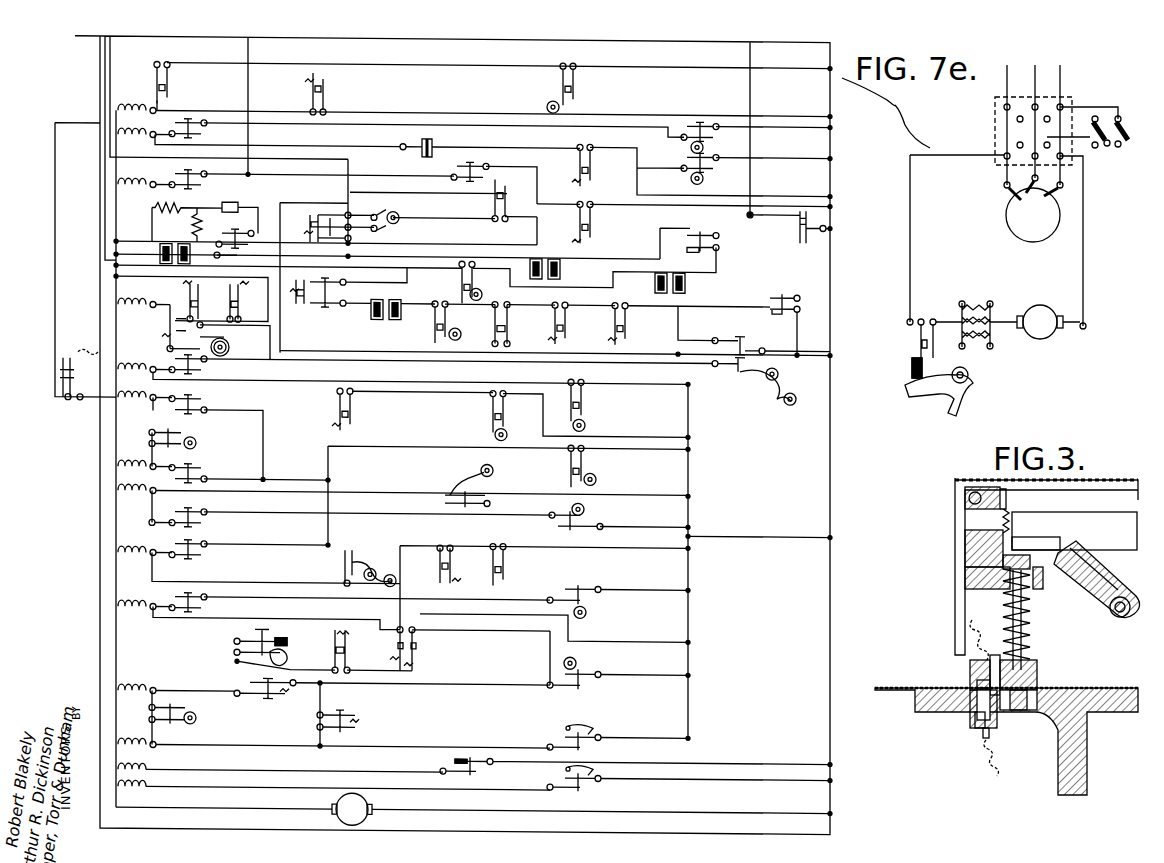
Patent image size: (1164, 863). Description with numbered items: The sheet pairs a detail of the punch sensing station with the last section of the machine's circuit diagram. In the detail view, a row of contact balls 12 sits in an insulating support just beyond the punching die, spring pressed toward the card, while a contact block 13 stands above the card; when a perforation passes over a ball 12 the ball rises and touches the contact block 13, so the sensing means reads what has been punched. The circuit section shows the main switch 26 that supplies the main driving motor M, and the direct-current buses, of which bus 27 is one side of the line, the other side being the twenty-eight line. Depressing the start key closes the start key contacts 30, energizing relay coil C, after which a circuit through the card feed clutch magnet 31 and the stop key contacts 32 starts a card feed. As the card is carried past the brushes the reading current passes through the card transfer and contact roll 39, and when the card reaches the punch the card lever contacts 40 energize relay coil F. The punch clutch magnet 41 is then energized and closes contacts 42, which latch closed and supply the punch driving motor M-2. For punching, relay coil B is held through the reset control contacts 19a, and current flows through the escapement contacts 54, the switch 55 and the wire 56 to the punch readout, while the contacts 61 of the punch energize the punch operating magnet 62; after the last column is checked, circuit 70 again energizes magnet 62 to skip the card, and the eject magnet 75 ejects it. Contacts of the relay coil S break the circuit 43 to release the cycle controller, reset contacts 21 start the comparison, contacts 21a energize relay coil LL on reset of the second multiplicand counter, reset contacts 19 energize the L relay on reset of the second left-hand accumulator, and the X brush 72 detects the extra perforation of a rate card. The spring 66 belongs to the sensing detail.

In FIG. 7E, the circuit 43 is at (100, 106).
In FIG. 7E, the circuit 70 is at (100, 210).
In FIG. 7E, the X brush 72 is at (433, 144).
In FIG. 7E, the wire 56 is at (345, 188).
In FIG. 7E, the switch 55 is at (389, 216).
In FIG. 7E, the escapement contacts 54 is at (493, 207).
In FIG. 7E, the eject magnet 75 is at (538, 254).
In FIG. 7E, the punch clutch magnet 41 is at (685, 282).
In FIG. 7E, the contacts of the punch 61 is at (214, 238).
In FIG. 7E, the punch operating magnet 62 is at (160, 256).
In FIG. 7E, the switch 26 is at (1120, 152).
In FIG. 7E, the contacts 42 is at (918, 338).
In FIG. 7E, the D. C. bus 27 is at (112, 544).
In FIG. 7E, the reset contacts 19 is at (750, 342).
In FIG. 7E, the reset control contacts 19a is at (730, 362).
In FIG. 7E, the reset contacts 21 is at (446, 488).
In FIG. 7E, the contacts 21a is at (352, 558).
In FIG. 7E, the start key contacts 30 is at (285, 647).
In FIG. 7E, the card feed clutch magnet 31 is at (388, 318).
In FIG. 7E, the stop key contacts 32 is at (510, 318).
In FIG. 7E, the card transfer and contact roll 39 is at (590, 740).
In FIG. 7E, the card lever contacts 40 is at (590, 790).
In FIG. 3, the contact block 13 is at (962, 682).
In FIG. 3, the contact balls 12 is at (962, 714).
In FIG. 3, the spring 66 is at (998, 765).
In FIG. 7E, the main driving motor M is at (1043, 233).
In FIG. 7E, the punch driving motor M-2 is at (1040, 338).